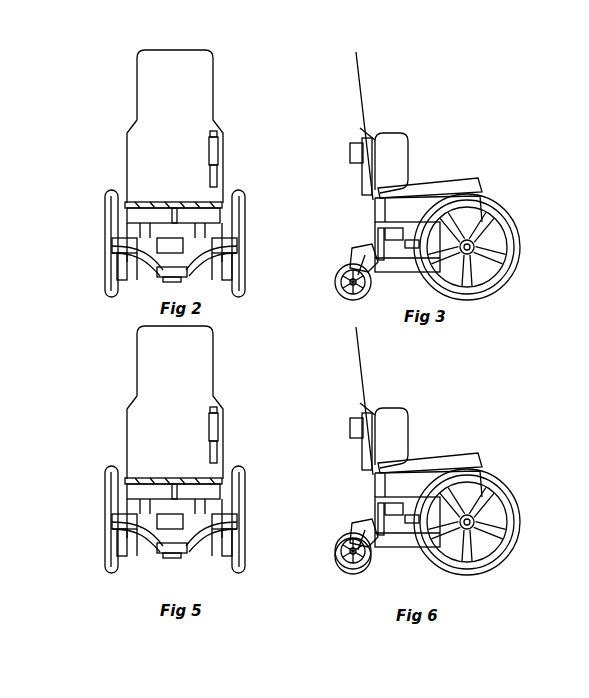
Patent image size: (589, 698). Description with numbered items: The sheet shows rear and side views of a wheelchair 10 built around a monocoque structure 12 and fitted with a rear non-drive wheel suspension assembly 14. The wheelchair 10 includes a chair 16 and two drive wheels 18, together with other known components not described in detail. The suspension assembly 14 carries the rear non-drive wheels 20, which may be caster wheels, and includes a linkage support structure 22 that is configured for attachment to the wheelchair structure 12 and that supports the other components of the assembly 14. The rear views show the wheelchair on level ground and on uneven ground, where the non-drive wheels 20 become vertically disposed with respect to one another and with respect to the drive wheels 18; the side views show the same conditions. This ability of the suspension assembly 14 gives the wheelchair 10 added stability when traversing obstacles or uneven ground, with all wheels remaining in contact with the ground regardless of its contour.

In FIG. 2, the wheelchair 10 is at (180, 184).
In FIG. 5, the wheelchair 10 is at (180, 466).
In FIG. 3, the wheelchair 10 is at (438, 184).
In FIG. 6, the wheelchair 10 is at (439, 470).
In FIG. 2, the monocoque structure 12 is at (216, 230).
In FIG. 5, the monocoque structure 12 is at (174, 517).
In FIG. 3, the monocoque structure 12 is at (403, 266).
In FIG. 6, the monocoque structure 12 is at (420, 542).
In FIG. 2, the rear non-drive wheel suspension assembly 14 is at (142, 289).
In FIG. 5, the rear non-drive wheel suspension assembly 14 is at (168, 556).
In FIG. 3, the rear non-drive wheel suspension assembly 14 is at (340, 238).
In FIG. 6, the rear non-drive wheel suspension assembly 14 is at (342, 504).
In FIG. 2, the chair 16 is at (233, 156).
In FIG. 5, the chair 16 is at (155, 402).
In FIG. 3, the chair 16 is at (403, 126).
In FIG. 6, the chair 16 is at (394, 401).
In FIG. 2, the drive wheels 18 is at (99, 246).
In FIG. 5, the drive wheels 18 is at (180, 519).
In FIG. 3, the drive wheels 18 is at (516, 212).
In FIG. 6, the drive wheels 18 is at (494, 514).
In FIG. 2, the non-drive wheels 20 is at (229, 283).
In FIG. 5, the non-drive wheels 20 is at (174, 561).
In FIG. 3, the non-drive wheels 20 is at (347, 299).
In FIG. 6, the non-drive wheels 20 is at (337, 546).
In FIG. 2, the linkage support structure 22 is at (178, 287).
In FIG. 5, the linkage support structure 22 is at (174, 572).